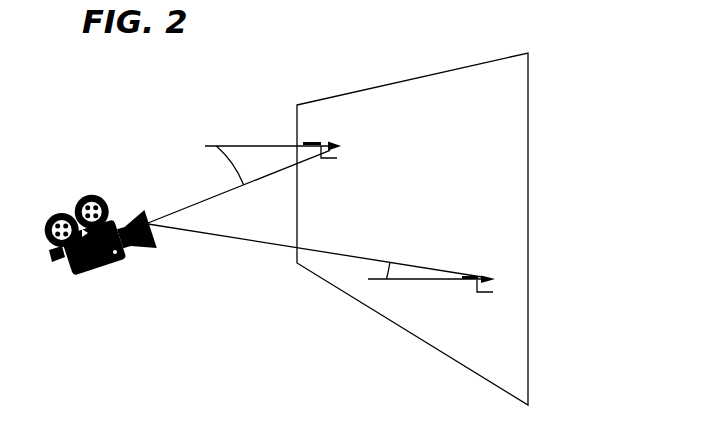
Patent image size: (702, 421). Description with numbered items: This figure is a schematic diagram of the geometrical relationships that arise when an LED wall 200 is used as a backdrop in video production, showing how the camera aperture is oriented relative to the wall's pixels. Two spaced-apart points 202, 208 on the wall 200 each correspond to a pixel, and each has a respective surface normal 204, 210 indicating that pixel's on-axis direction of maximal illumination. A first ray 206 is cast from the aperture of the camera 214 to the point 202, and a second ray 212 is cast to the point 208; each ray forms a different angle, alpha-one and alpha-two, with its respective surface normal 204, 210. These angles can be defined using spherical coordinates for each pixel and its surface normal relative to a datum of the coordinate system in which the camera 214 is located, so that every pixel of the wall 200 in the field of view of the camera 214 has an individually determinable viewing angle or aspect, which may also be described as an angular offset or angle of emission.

The LED wall 200 is at (516, 56).
The point of the wall 202 is at (340, 145).
The surface normal 204 is at (257, 146).
The first ray 206 is at (195, 203).
The point of the wall 208 is at (497, 279).
The surface normal 210 is at (420, 279).
The second ray 212 is at (257, 243).
The camera 214 is at (100, 273).